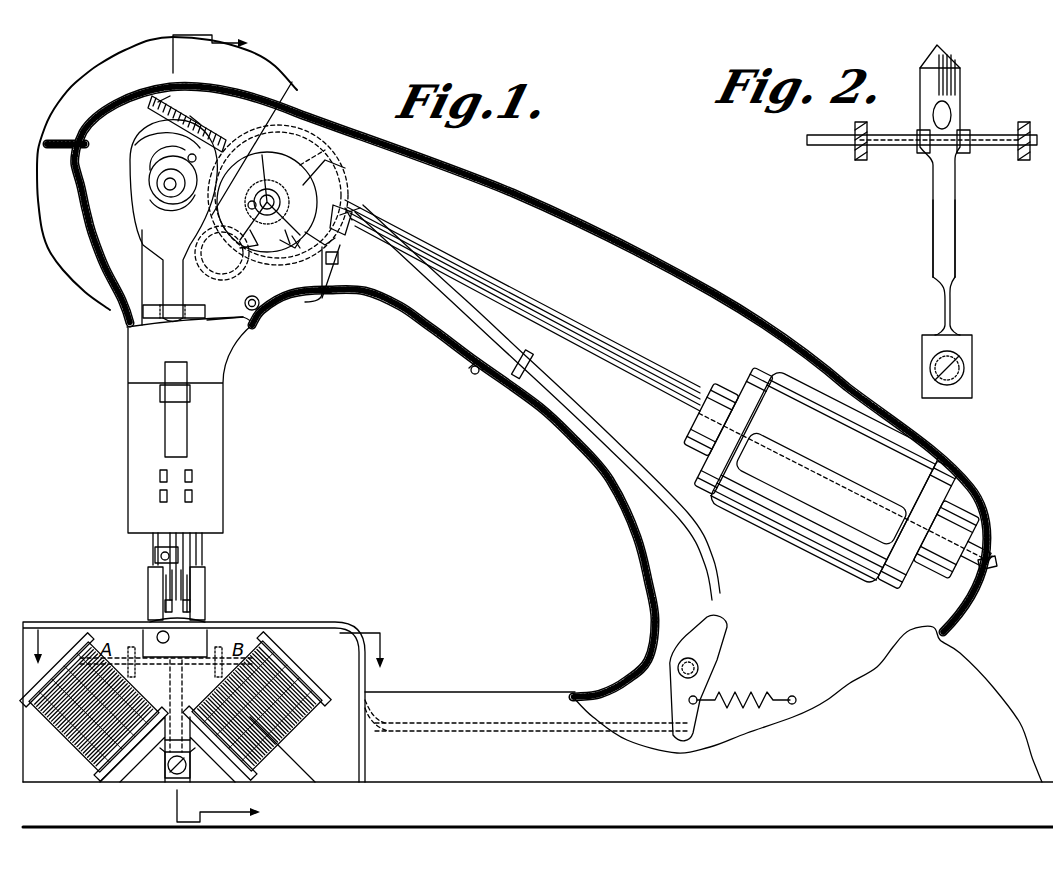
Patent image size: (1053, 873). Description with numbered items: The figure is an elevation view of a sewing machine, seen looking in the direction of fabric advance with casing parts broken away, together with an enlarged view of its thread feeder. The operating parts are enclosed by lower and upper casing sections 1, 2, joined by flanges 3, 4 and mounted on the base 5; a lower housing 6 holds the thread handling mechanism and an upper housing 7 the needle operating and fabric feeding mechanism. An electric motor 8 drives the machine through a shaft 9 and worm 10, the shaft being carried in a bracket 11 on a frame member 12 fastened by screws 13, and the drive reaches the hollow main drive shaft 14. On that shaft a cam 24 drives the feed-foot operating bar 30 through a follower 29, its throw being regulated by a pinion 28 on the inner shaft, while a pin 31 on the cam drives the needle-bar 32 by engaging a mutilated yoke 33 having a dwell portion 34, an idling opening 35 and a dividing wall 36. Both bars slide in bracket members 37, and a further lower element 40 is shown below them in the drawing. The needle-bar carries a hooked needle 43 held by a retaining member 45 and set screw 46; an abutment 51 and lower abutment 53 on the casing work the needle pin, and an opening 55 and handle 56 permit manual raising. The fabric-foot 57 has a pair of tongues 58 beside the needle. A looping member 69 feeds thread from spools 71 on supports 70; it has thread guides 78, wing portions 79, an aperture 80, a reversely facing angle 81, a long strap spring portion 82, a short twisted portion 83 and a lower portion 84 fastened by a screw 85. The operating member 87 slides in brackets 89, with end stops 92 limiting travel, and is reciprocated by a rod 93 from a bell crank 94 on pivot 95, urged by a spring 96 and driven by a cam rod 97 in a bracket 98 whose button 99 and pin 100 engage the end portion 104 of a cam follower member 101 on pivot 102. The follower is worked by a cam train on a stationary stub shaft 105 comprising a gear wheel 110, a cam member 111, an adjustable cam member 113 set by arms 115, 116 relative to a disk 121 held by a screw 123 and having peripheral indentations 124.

In FIG. 1, the lower casing section 1 is at (592, 470).
In FIG. 1, the upper casing section 2 is at (712, 293).
In FIG. 1, the flange 3 is at (590, 429).
In FIG. 1, the flange 4 is at (994, 556).
In FIG. 1, the base 5 is at (975, 768).
In FIG. 1, the lower housing 6 is at (327, 624).
In FIG. 1, the upper housing 7 is at (117, 260).
In FIG. 1, the electric motor 8 is at (795, 388).
In FIG. 1, the shaft 9 is at (663, 378).
In FIG. 1, the worm 10 is at (197, 117).
In FIG. 1, the bracket 11 is at (163, 105).
In FIG. 1, the frame member 12 is at (318, 292).
In FIG. 1, the screws 13 is at (290, 300).
In FIG. 1, the main drive shaft 14 is at (168, 196).
In FIG. 1, the cam 24 is at (225, 649).
In FIG. 1, the pinion 28 is at (176, 203).
In FIG. 1, the follower 29 is at (142, 142).
In FIG. 1, the feed-foot operating bar 30 is at (178, 228).
In FIG. 1, the pin 31 is at (180, 125).
In FIG. 1, the needle-bar 32 is at (172, 296).
In FIG. 1, the mutilated yoke 33 is at (158, 175).
In FIG. 1, the dwell portion 34 is at (150, 162).
In FIG. 1, the idling opening 35 is at (182, 212).
In FIG. 1, the dividing wall 36 is at (166, 190).
In FIG. 1, the bracket members 37 is at (150, 318).
In FIG. 1, the plunger 40 is at (176, 598).
In FIG. 1, the hooked needle 43 is at (182, 575).
In FIG. 1, the retaining member 45 is at (152, 548).
In FIG. 1, the set screw 46 is at (156, 557).
In FIG. 1, the abutment 51 is at (170, 475).
In FIG. 1, the lower abutment 53 is at (163, 500).
In FIG. 1, the opening 55 is at (176, 430).
In FIG. 1, the handle 56 is at (162, 393).
In FIG. 1, the fabric-foot 57 is at (148, 585).
In FIG. 1, the tongues 58 is at (166, 610).
In FIG. 1, the looping member 69 is at (183, 682).
In FIG. 2, the looping member 69 is at (957, 218).
In FIG. 1, the supports 70 is at (138, 770).
In FIG. 1, the spools 71 is at (50, 688).
In FIG. 2, the thread guides 78 is at (945, 55).
In FIG. 2, the wing portions 79 is at (921, 72).
In FIG. 2, the aperture 80 is at (951, 118).
In FIG. 2, the reversely facing angle 81 is at (950, 150).
In FIG. 2, the long strap spring portion 82 is at (935, 240).
In FIG. 1, the short strap spring portion 83 is at (252, 762).
In FIG. 2, the short strap spring portion 83 is at (952, 316).
In FIG. 1, the lower portion 84 is at (187, 765).
In FIG. 2, the lower portion 84 is at (961, 360).
In FIG. 1, the screw 85 is at (188, 780).
In FIG. 2, the screw 85 is at (973, 378).
In FIG. 2, the operating member 87 is at (832, 146).
In FIG. 1, the brackets 89 is at (128, 642).
In FIG. 2, the brackets 89 is at (862, 122).
In FIG. 1, the end stops 92 is at (195, 630).
In FIG. 1, the rod 93 is at (527, 715).
In FIG. 1, the bell crank 94 is at (685, 700).
In FIG. 1, the pivot 95 is at (700, 668).
In FIG. 1, the spring 96 is at (745, 708).
In FIG. 1, the cam rod 97 is at (720, 592).
In FIG. 1, the bracket 98 is at (534, 365).
In FIG. 1, the button 99 is at (372, 232).
In FIG. 1, the pin 100 is at (348, 206).
In FIG. 1, the cam follower member 101 is at (318, 283).
In FIG. 1, the pivot 102 is at (217, 322).
In FIG. 1, the end portion 104 is at (356, 214).
In FIG. 1, the stationary stub shaft 105 is at (285, 246).
In FIG. 1, the gear wheel 110 is at (284, 140).
In FIG. 1, the cam member 111 is at (335, 186).
In FIG. 1, the adjustable cam member 113 is at (219, 253).
In FIG. 1, the arm 115 is at (263, 142).
In FIG. 1, the arm 116 is at (330, 253).
In FIG. 1, the disk 121 is at (318, 150).
In FIG. 1, the screw 123 is at (241, 194).
In FIG. 1, the peripheral indentations 124 is at (312, 172).